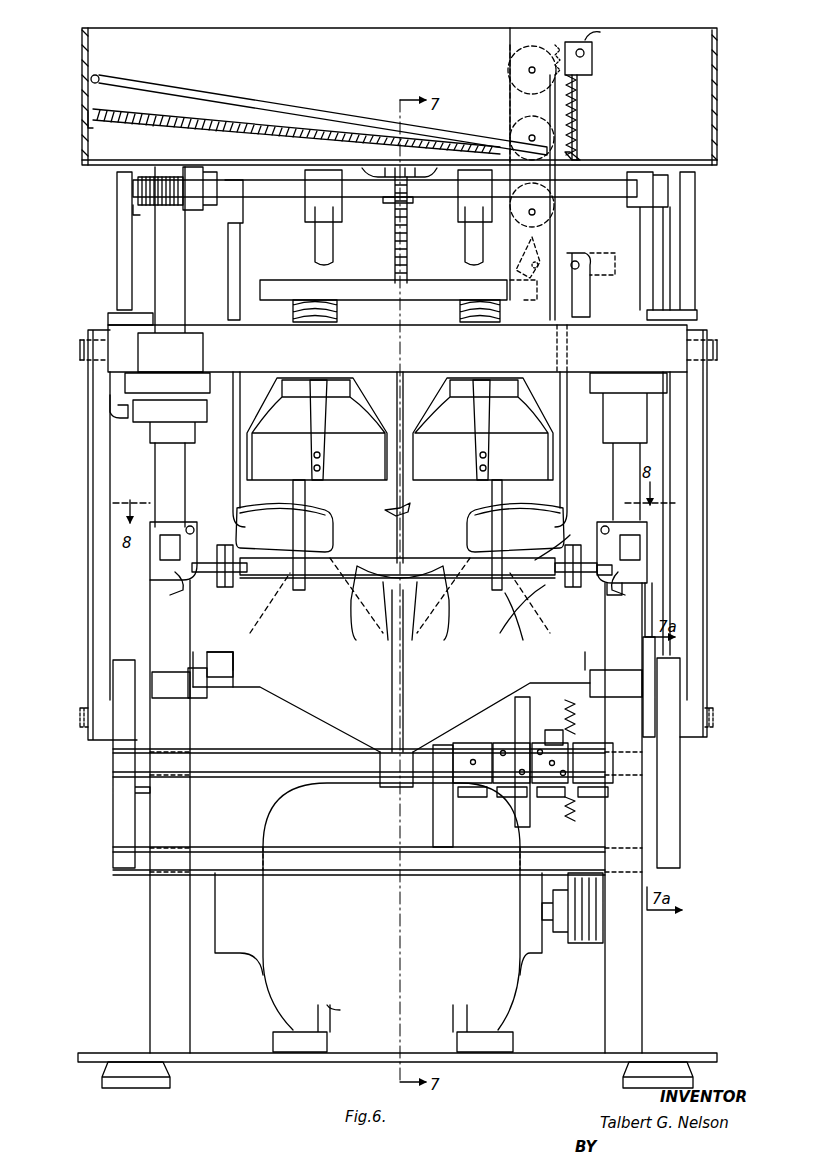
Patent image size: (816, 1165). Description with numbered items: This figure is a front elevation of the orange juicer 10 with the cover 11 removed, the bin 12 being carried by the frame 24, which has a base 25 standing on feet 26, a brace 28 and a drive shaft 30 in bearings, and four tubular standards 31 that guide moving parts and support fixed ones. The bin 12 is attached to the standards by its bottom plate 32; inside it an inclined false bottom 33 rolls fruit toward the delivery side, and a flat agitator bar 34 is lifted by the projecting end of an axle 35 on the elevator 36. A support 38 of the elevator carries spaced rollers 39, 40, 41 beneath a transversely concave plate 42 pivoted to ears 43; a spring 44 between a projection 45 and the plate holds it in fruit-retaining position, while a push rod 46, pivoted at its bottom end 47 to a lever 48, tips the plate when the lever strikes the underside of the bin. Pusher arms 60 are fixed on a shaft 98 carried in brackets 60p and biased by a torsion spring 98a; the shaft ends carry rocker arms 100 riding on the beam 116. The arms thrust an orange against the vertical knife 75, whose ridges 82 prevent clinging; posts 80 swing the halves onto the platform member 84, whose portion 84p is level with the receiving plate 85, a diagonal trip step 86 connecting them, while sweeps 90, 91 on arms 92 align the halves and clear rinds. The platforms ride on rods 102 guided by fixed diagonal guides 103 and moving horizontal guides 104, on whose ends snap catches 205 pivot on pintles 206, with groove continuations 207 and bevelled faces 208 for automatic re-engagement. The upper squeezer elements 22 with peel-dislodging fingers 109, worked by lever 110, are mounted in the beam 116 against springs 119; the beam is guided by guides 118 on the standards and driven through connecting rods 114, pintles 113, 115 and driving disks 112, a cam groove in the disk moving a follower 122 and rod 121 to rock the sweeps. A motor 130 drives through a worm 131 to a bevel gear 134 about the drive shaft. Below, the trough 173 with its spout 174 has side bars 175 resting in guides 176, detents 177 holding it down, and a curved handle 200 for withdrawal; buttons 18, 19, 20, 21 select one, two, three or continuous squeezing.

The orange juicer 10 is at (115, 229).
The cover 11 is at (719, 100).
The bin 12 is at (112, 50).
The button 18 is at (463, 745).
The button 19 is at (505, 748).
The button 20 is at (548, 745).
The button 21 is at (585, 745).
The upper squeezer elements 22 is at (352, 428).
The frame 24 is at (158, 975).
The base 25 is at (217, 1065).
The feet 26 is at (125, 1085).
The brace 28 is at (355, 860).
The drive shaft 30 is at (230, 772).
The standards 31 is at (160, 613).
The bottom plate 32 is at (228, 163).
The inclined false bottom 33 is at (167, 126).
The agitator 34 is at (330, 118).
The axle 35 is at (531, 216).
The elevator 36 is at (506, 92).
The support 38 is at (520, 104).
The roller 39 is at (515, 218).
The roller 40 is at (512, 138).
The roller 41 is at (508, 64).
The transversely concave plate 42 is at (603, 31).
The ears 43 is at (590, 62).
The spring 44 is at (578, 112).
The projection 45 is at (582, 152).
The push rod 46 is at (580, 92).
The bottom end 47 is at (530, 265).
The lever 48 is at (597, 258).
The pusher arms 60 is at (316, 243).
The brackets 60p is at (195, 210).
The knife 75 is at (404, 518).
The posts 80 is at (307, 503).
The ridges 82 is at (388, 516).
The platform member 84 is at (414, 547).
The platform portion 84p is at (521, 614).
The plate 85 is at (400, 613).
The trip step 86 is at (448, 565).
The sweep 90 is at (268, 522).
The sweep 91 is at (528, 520).
The arms 92 is at (233, 480).
The shaft 98 is at (365, 208).
The torsion spring 98a is at (172, 208).
The rocker arms 100 is at (122, 262).
The rods 102 is at (205, 545).
The guides 103 is at (222, 597).
The guides 104 is at (640, 540).
The fingers 109 is at (478, 440).
The lever 110 is at (130, 418).
The driving disk 112 is at (118, 826).
The pintles 113 is at (82, 718).
The connecting rods 114 is at (100, 522).
The pintles 115 is at (708, 352).
The beam 116 is at (432, 360).
The guides 118 is at (168, 436).
The springs 119 is at (335, 310).
The rod 121 is at (668, 250).
The follower 122 is at (650, 680).
The motor 130 is at (392, 970).
The worm 131 is at (580, 940).
The bevel gear 134 is at (568, 810).
The trough 173 is at (308, 688).
The spout 174 is at (392, 787).
The side bars 175 is at (210, 655).
The guides 176 is at (207, 690).
The detents 177 is at (198, 698).
The curved handle 200 is at (405, 695).
The snap catches 205 is at (165, 522).
The pintles 206 is at (612, 570).
The continuations 207 is at (170, 588).
The bevelled faces 208 is at (624, 595).